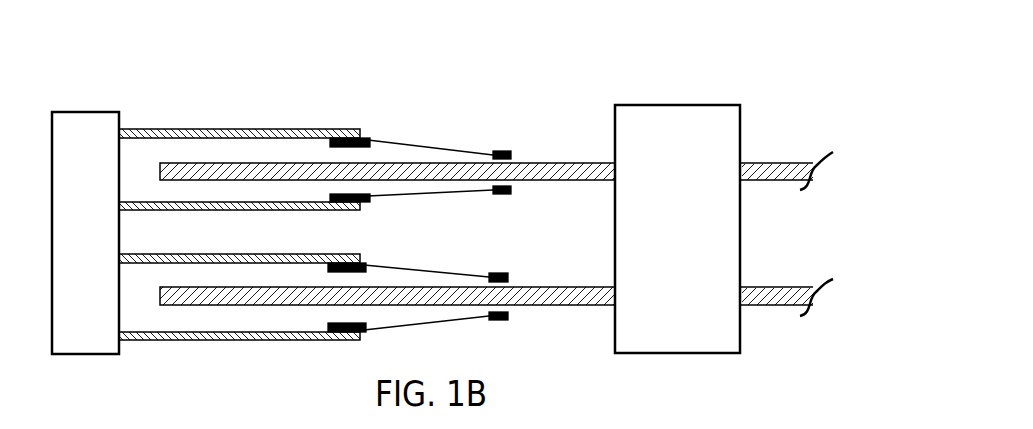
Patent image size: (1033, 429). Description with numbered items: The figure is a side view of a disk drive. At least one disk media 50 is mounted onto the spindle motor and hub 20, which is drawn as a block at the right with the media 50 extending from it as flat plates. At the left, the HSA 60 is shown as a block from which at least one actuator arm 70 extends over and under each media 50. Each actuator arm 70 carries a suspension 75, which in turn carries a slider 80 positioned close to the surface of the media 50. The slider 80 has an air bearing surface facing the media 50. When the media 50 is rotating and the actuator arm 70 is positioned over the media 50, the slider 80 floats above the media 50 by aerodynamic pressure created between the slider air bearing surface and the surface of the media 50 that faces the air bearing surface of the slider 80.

The spindle motor and hub 20 is at (680, 210).
The disk media 50 is at (496, 183).
The HSA 60 is at (101, 213).
The actuator arm 70 is at (244, 215).
The suspension 75 is at (428, 216).
The slider 80 is at (474, 185).